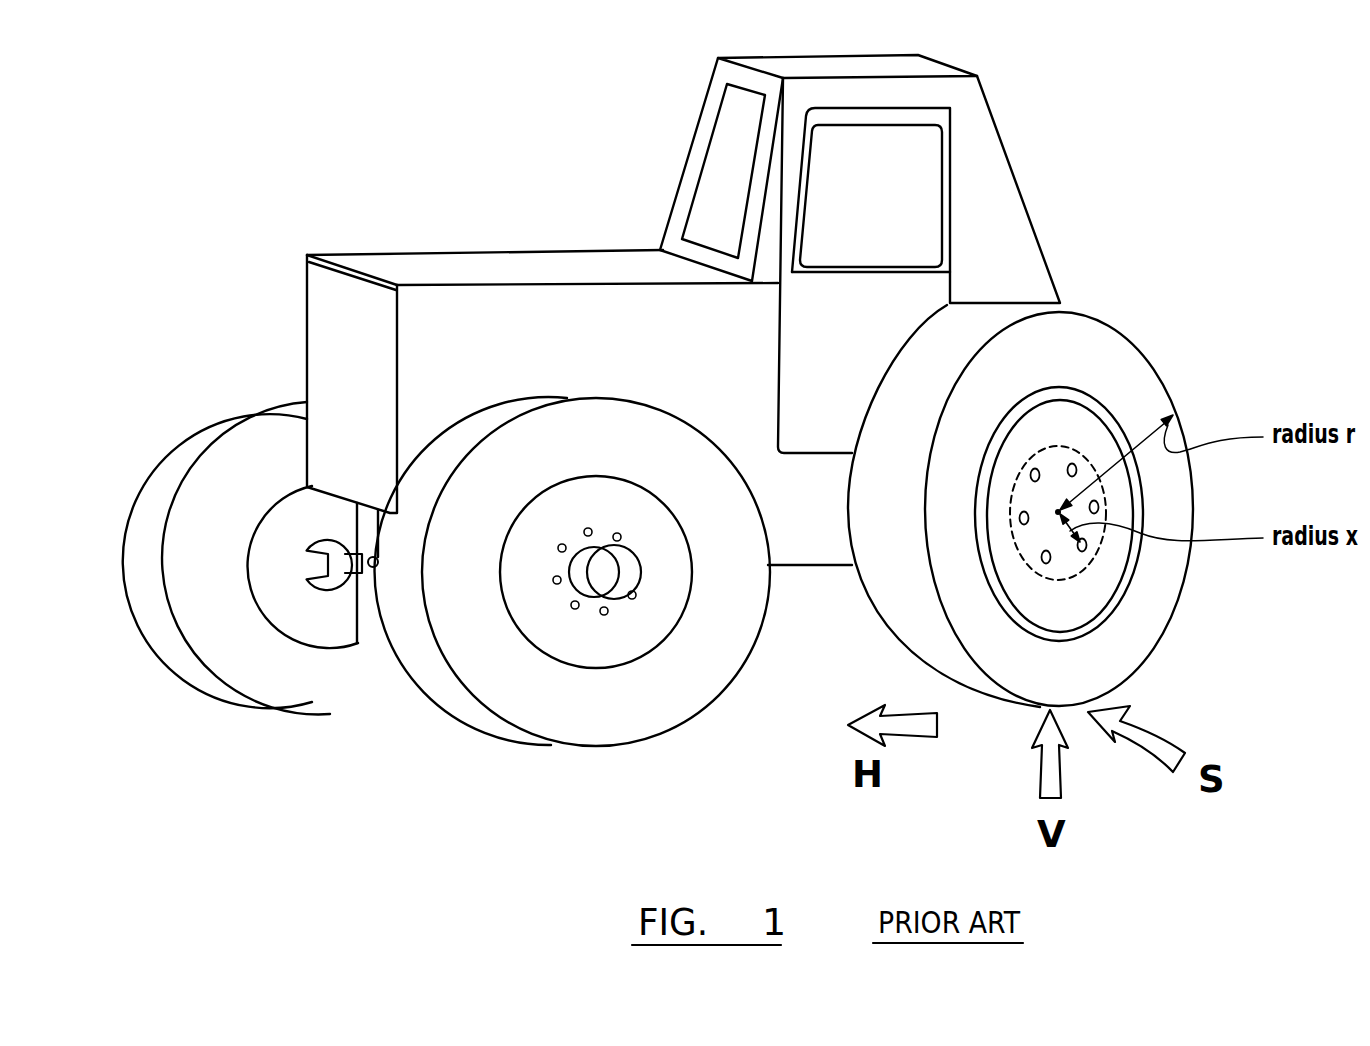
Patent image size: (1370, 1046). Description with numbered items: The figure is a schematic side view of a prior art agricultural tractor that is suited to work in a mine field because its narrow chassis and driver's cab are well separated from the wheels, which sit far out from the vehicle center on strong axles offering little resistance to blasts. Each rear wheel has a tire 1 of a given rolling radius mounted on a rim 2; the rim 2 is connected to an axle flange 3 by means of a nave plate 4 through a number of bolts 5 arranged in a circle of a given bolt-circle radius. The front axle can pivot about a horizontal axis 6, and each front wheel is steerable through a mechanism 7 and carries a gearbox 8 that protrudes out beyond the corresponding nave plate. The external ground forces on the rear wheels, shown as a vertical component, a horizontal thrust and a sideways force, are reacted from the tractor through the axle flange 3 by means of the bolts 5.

The tire 1 is at (1165, 384).
The rim 2 is at (1123, 585).
The axle flange 3 is at (1060, 446).
The nave plate 4 is at (1007, 570).
The bolts 5 is at (1074, 464).
The horizontal axis 6 is at (367, 570).
The steering mechanism 7 is at (317, 567).
The gearbox 8 is at (610, 572).